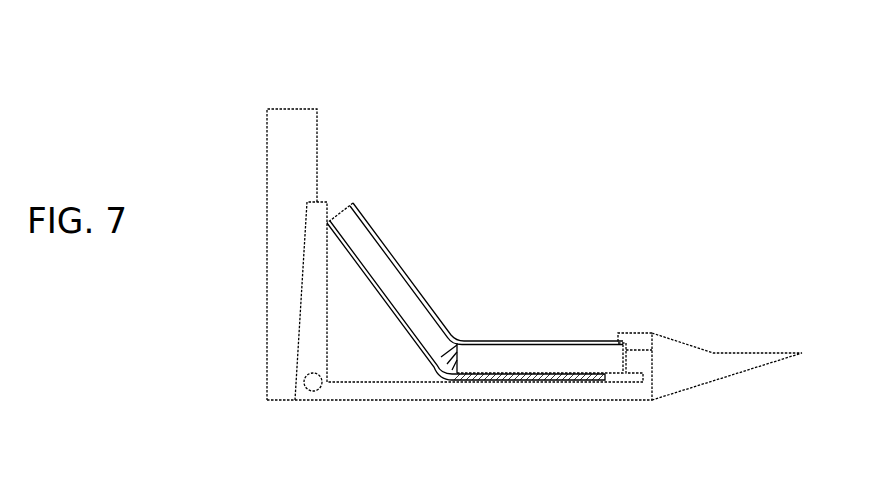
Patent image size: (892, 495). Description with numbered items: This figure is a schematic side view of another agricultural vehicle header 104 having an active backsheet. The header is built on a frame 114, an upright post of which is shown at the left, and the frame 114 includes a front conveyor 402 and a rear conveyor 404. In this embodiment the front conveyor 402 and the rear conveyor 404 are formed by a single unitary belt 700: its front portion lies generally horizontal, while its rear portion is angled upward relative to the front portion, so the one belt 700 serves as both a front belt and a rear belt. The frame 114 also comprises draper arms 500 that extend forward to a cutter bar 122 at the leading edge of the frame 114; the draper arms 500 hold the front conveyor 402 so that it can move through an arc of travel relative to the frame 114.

The seat assembly 104 is at (572, 153).
The frame 114 is at (294, 122).
The cutter bar 122 is at (760, 365).
The front conveyor 402 is at (573, 330).
The rear conveyor 404 is at (412, 252).
The draper arms 500 is at (475, 390).
The single unitary belt 700 is at (432, 298).